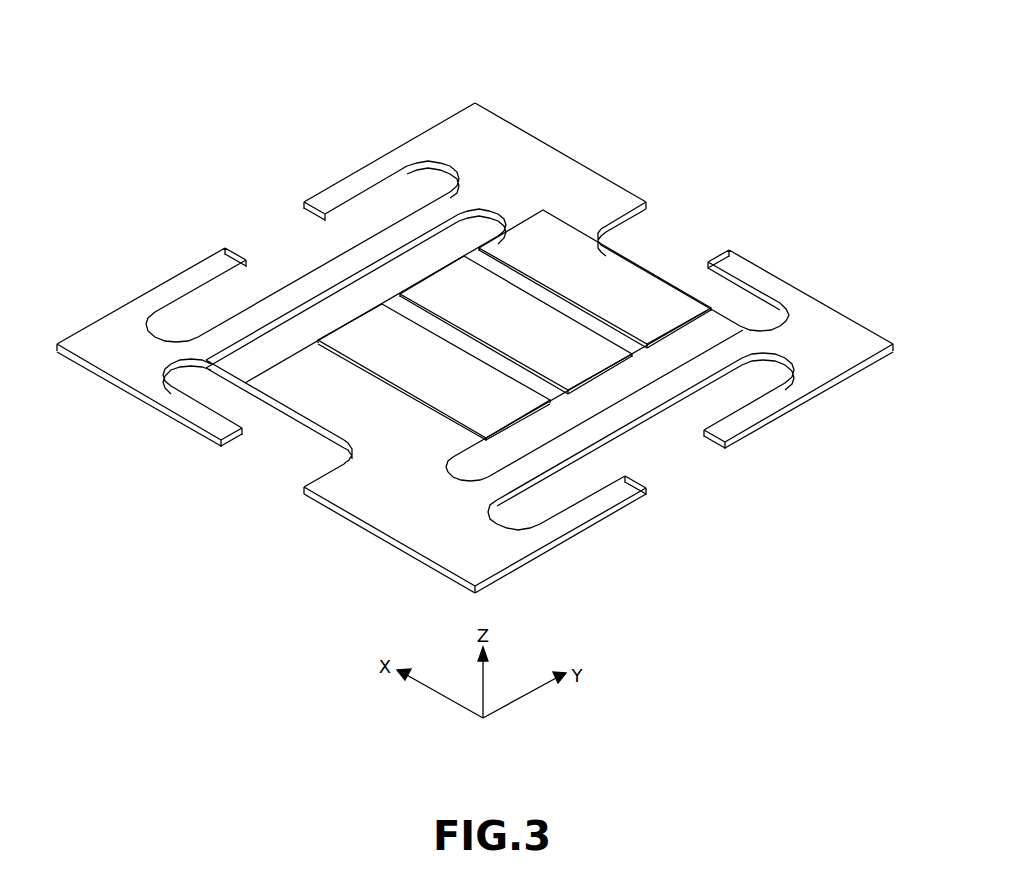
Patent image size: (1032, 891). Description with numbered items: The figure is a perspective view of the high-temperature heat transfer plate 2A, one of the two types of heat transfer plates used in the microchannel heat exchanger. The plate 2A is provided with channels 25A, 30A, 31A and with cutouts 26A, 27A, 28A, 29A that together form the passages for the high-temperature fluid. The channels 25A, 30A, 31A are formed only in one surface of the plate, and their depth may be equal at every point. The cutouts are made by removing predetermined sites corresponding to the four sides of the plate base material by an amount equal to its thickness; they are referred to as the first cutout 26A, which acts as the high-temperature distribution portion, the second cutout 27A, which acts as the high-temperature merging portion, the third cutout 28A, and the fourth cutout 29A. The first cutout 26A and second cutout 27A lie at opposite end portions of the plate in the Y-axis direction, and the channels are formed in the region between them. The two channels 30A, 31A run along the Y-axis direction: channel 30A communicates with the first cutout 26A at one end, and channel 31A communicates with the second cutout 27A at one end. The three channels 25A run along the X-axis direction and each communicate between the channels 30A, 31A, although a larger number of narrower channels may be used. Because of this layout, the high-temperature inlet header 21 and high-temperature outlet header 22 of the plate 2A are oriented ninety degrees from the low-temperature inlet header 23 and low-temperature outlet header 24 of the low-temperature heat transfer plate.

The high-temperature heat transfer plate 2A is at (574, 106).
The high-temperature inlet header 21 is at (250, 448).
The high-temperature outlet header 22 is at (690, 229).
The low-temperature inlet header 23 is at (241, 232).
The low-temperature outlet header 24 is at (701, 454).
The channels 25A is at (534, 283).
The first cutout 26A is at (327, 473).
The second cutout 27A is at (632, 222).
The third cutout 28A is at (343, 221).
The fourth cutout 29A is at (614, 478).
The channel 30A is at (492, 208).
The channel 31A is at (451, 475).